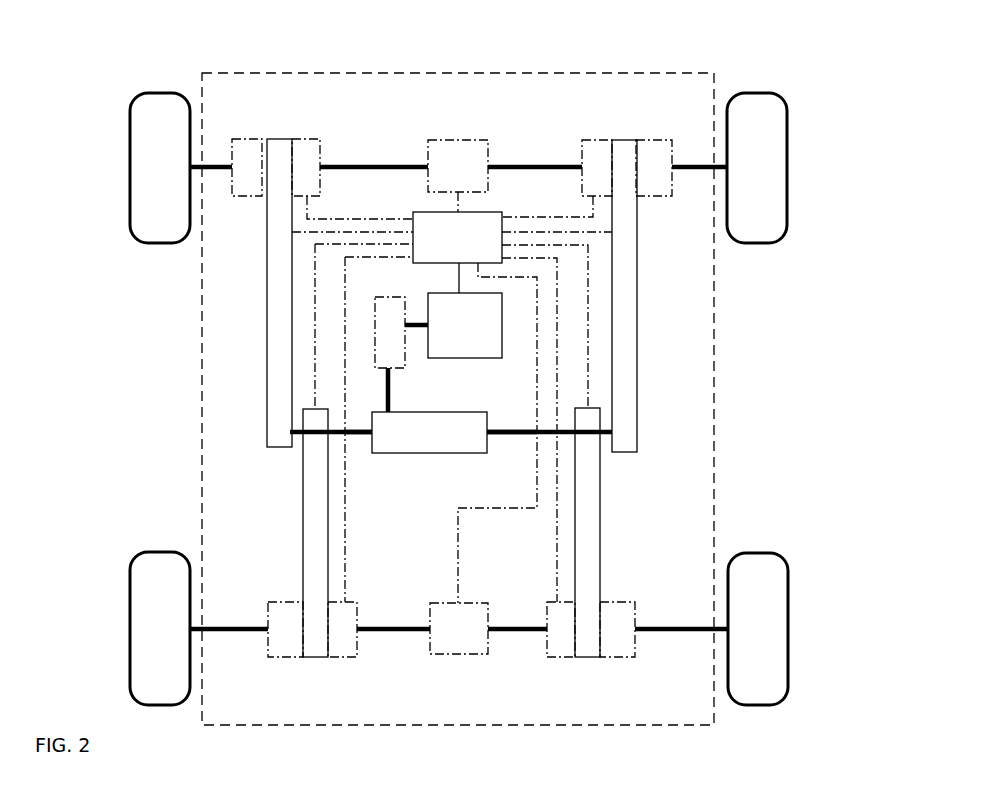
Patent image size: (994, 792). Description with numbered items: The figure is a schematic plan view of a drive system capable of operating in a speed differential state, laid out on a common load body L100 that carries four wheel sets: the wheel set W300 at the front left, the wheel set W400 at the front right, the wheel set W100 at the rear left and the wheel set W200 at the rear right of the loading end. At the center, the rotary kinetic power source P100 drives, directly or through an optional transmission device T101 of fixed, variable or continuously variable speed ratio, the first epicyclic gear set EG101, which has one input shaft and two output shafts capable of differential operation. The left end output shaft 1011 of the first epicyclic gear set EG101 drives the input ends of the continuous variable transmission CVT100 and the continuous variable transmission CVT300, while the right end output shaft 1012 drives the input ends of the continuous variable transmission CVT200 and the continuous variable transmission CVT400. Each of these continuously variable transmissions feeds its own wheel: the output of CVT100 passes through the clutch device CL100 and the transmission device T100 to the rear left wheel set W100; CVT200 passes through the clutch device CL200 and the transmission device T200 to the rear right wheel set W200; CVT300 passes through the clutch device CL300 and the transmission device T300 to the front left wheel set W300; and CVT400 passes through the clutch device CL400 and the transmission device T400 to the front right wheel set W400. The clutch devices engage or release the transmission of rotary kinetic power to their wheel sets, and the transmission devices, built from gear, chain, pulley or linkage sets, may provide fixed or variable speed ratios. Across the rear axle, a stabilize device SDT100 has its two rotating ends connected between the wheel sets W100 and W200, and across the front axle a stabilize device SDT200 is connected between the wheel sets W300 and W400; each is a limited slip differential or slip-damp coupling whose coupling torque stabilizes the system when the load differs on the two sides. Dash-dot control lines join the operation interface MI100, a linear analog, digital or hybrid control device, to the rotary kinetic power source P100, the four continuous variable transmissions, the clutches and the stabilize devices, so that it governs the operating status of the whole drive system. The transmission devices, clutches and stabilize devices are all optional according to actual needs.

The common load body L100 is at (200, 410).
The wheel set at the rear left side W100 is at (147, 578).
The wheel set at the rear right side W200 is at (776, 583).
The wheel set at the front left side W300 is at (147, 116).
The wheel set at the front right side W400 is at (776, 130).
The transmission device T100 is at (278, 613).
The transmission device T200 is at (618, 610).
The transmission device T300 is at (248, 152).
The transmission device T400 is at (656, 153).
The transmission device T101 is at (402, 372).
The clutch device CL100 is at (358, 612).
The clutch device CL200 is at (548, 618).
The clutch device CL300 is at (300, 152).
The clutch device CL400 is at (594, 150).
The continuous variable transmission CVT100 is at (315, 550).
The continuous variable transmission CVT200 is at (588, 566).
The continuous variable transmission CVT300 is at (280, 430).
The continuous variable transmission CVT400 is at (623, 434).
The stabilize device SDT100 is at (457, 632).
The stabilize device SDT200 is at (458, 152).
The operation interface MI100 is at (457, 237).
The rotary kinetic power source P100 is at (465, 325).
The first epicyclic gear set EG101 is at (429, 432).
The left end output shaft 1011 is at (357, 437).
The right end output shaft 1012 is at (512, 434).